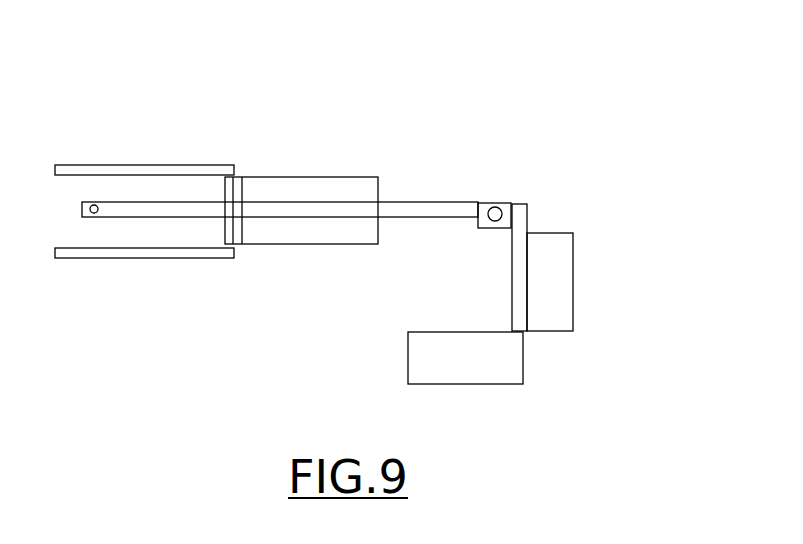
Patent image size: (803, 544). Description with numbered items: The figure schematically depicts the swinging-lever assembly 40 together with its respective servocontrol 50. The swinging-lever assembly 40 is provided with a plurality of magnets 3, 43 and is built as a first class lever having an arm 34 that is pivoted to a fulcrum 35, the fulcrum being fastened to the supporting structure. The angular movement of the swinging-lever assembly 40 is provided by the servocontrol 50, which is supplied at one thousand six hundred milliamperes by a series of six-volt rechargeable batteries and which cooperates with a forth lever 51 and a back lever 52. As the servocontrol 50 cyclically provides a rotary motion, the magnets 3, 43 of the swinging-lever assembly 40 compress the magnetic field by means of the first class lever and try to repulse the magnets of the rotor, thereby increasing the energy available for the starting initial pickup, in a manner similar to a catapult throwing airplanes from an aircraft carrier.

The swinging-lever assembly 40 is at (256, 99).
The forth lever 51 is at (147, 165).
The back lever 52 is at (145, 258).
The servocontrol 50 is at (298, 177).
The arm 34 is at (425, 202).
The fulcrum 35 is at (495, 206).
The magnet 3 is at (573, 280).
The magnet 43 is at (408, 358).